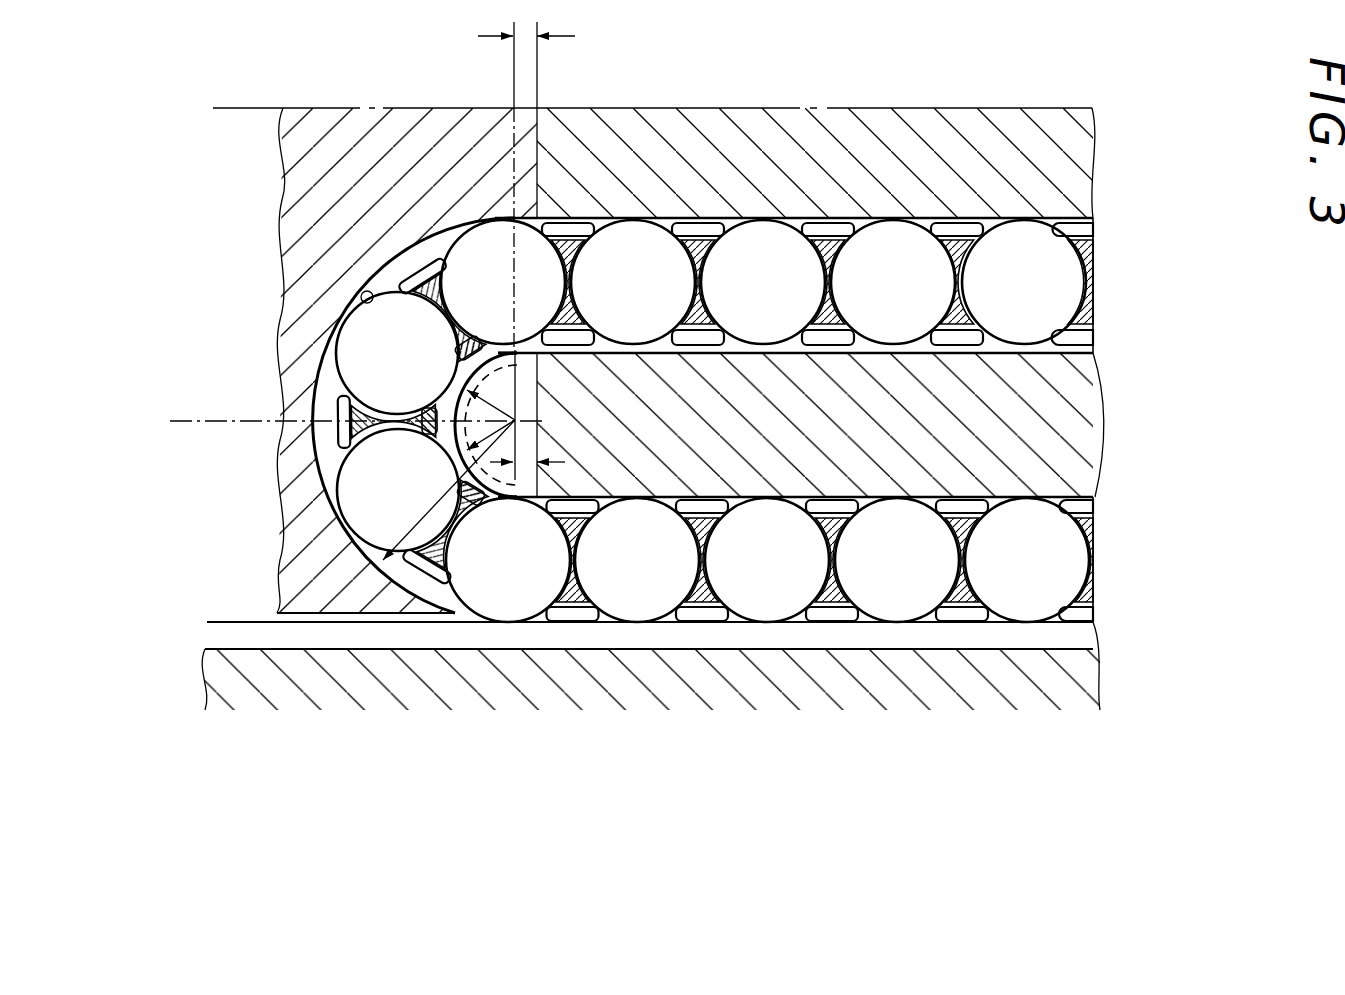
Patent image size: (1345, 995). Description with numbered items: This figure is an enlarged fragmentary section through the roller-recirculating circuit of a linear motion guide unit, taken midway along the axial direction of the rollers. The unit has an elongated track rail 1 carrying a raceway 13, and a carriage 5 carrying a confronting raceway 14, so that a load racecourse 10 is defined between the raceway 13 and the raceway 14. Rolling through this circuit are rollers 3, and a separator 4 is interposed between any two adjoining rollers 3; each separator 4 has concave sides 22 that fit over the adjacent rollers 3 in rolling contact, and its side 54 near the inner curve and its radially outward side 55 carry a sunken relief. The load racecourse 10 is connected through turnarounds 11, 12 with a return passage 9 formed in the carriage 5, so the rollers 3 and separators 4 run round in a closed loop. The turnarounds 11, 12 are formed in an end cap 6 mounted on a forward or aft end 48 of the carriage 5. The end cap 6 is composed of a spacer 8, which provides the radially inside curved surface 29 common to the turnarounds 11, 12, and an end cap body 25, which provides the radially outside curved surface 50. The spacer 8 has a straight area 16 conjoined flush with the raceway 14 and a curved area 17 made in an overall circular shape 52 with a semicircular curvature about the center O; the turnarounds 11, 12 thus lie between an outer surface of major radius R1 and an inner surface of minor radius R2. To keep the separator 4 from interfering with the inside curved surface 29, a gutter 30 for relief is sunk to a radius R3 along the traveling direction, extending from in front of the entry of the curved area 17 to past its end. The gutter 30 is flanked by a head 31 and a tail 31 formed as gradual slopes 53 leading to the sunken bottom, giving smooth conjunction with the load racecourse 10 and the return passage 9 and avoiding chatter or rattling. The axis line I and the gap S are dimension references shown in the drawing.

The track rail 1 is at (548, 695).
The roller 3 is at (493, 243).
The separator 4 is at (437, 275).
The carriage 5 is at (840, 165).
The end cap 6 is at (367, 157).
The spacer 8 is at (497, 505).
The return passage 9 is at (667, 218).
The load racecourse 10 is at (742, 497).
The turnaround 11 is at (332, 481).
The turnaround 12 is at (410, 268).
The raceway 13 is at (792, 572).
The raceway 14 is at (232, 622).
The straight area 16 is at (530, 347).
The curved area 17 is at (450, 400).
The concave side 22 is at (820, 267).
The end cap body 25 is at (330, 207).
The radially inside curved surface 29 is at (463, 385).
The gutter for relief 30 is at (455, 463).
The head and tail of the gutter 31 is at (548, 342).
The forward and aft ends of the carriage 48 is at (537, 154).
The radially outside curved surface 50 is at (361, 293).
The circular shape 52 is at (462, 278).
The slope 53 is at (517, 348).
The side of the separator 54 is at (937, 340).
The radially outward side of the separator 55 is at (712, 240).
The center O is at (526, 410).
The axis I is at (355, 421).
The gap S is at (550, 462).
The major radius of curvature R1 is at (345, 508).
The minor radius of curvature R2 is at (467, 390).
The radius of curvature of the gutter R3 is at (467, 450).